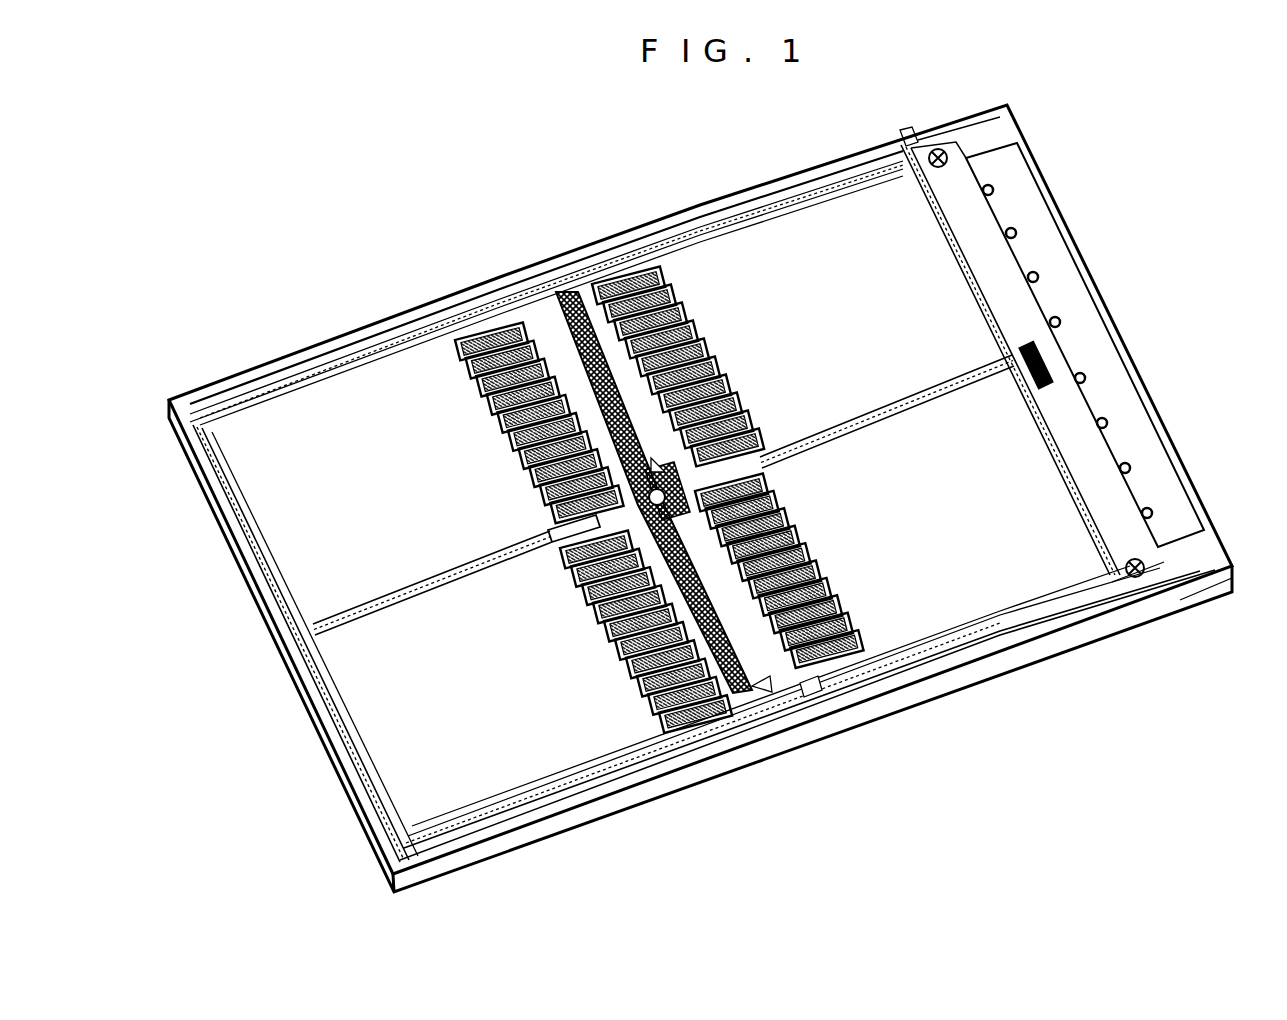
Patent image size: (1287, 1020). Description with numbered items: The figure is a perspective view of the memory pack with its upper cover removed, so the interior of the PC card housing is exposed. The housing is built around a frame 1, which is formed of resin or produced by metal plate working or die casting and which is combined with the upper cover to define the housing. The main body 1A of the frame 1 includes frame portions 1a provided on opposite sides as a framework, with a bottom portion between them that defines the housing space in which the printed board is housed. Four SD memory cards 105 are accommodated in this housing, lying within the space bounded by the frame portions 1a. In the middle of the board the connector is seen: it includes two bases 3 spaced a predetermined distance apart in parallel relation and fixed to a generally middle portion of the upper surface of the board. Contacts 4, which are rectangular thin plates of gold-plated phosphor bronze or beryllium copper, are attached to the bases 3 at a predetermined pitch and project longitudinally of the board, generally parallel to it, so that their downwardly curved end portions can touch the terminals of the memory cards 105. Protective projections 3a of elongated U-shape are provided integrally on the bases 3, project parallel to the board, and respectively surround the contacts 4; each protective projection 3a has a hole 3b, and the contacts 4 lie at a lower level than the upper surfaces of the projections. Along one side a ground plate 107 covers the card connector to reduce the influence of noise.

The main body 1A is at (368, 862).
The frame 1 is at (645, 795).
The frame portions 1a is at (258, 370).
The memory cards 105 is at (380, 497).
The bases 3 is at (535, 318).
The protective projections 3a is at (690, 332).
The hole 3b is at (647, 318).
The contacts 4 is at (590, 438).
The ground plate 107 is at (1115, 378).